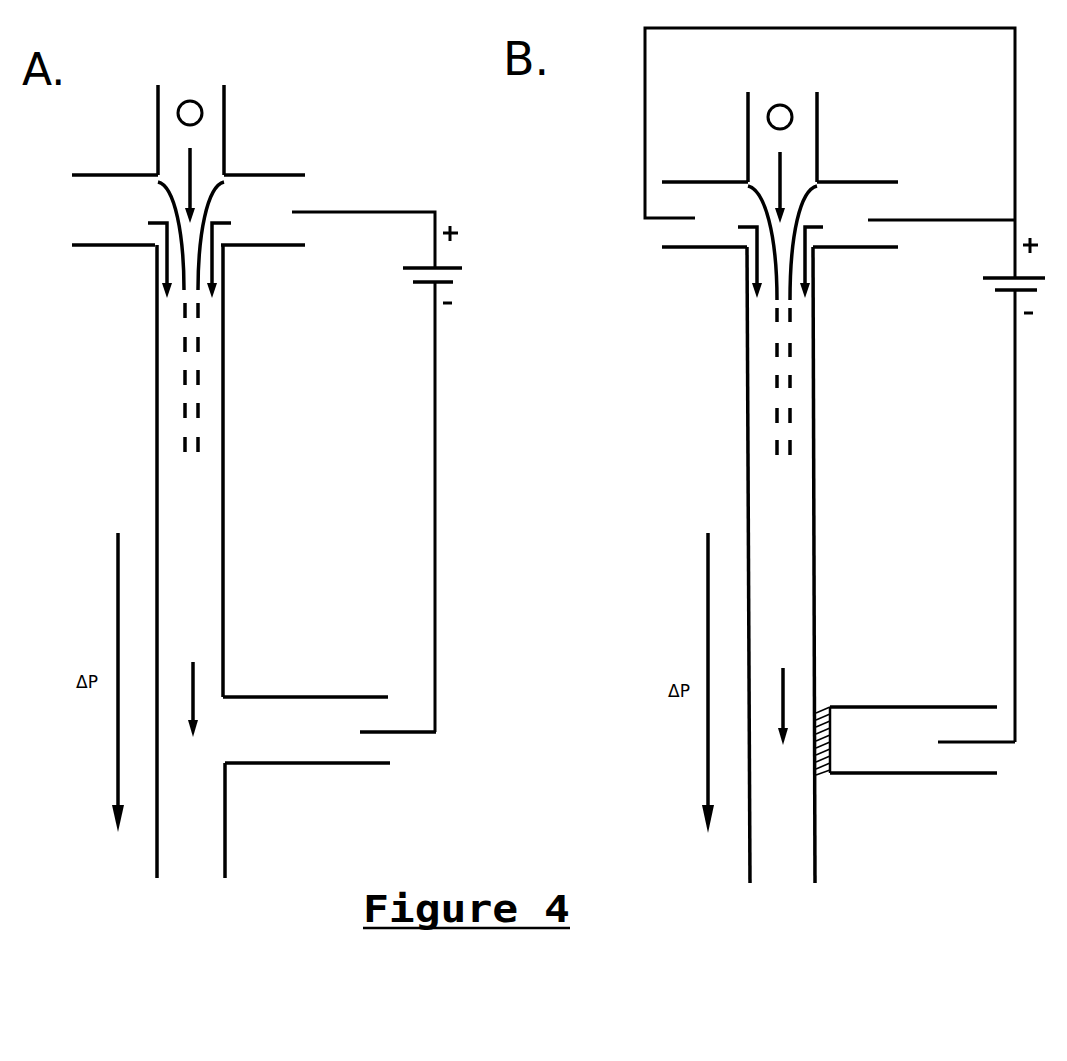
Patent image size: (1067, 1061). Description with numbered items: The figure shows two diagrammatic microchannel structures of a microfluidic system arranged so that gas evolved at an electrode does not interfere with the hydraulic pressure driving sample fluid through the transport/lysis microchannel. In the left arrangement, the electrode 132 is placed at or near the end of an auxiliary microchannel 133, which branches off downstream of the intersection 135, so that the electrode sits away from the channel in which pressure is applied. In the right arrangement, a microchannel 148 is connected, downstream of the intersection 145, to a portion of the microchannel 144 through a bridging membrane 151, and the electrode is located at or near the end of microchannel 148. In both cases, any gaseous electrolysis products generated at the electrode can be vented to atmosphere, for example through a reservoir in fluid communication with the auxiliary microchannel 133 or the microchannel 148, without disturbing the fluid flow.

The electrode 132 is at (413, 738).
The auxiliary microchannel 133 is at (268, 685).
The intersection 135 is at (143, 257).
The microchannel 144 is at (818, 511).
The intersection 145 is at (740, 255).
The microchannel 148 is at (890, 697).
The bridging membrane 151 is at (828, 783).